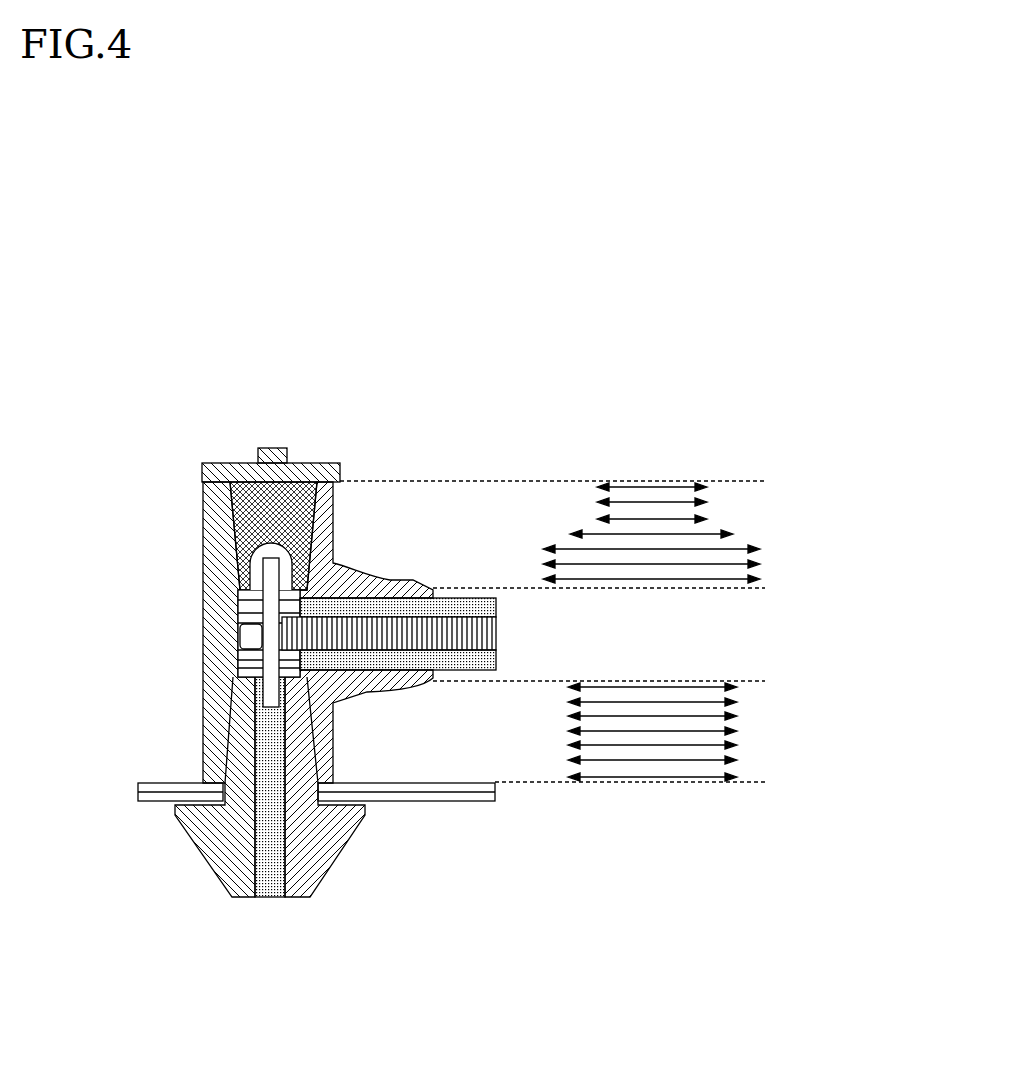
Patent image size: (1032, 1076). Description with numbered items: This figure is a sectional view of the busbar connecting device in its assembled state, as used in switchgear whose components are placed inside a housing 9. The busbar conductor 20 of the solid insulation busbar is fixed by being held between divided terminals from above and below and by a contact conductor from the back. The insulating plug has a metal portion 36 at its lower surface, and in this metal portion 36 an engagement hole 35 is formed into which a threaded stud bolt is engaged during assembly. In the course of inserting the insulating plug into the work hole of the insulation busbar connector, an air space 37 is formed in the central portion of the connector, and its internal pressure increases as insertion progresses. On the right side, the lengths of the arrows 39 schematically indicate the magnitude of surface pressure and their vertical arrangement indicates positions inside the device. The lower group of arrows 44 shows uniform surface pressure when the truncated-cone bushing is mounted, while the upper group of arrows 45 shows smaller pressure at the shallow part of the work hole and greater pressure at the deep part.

The housing 9 is at (482, 803).
The busbar conductor 20 is at (496, 631).
The engagement hole 35 is at (245, 560).
The metal portion 36 is at (292, 553).
The air space 37 is at (240, 677).
The arrows 39 is at (620, 503).
The group of arrows 44 is at (797, 657).
The group of arrows 45 is at (812, 472).